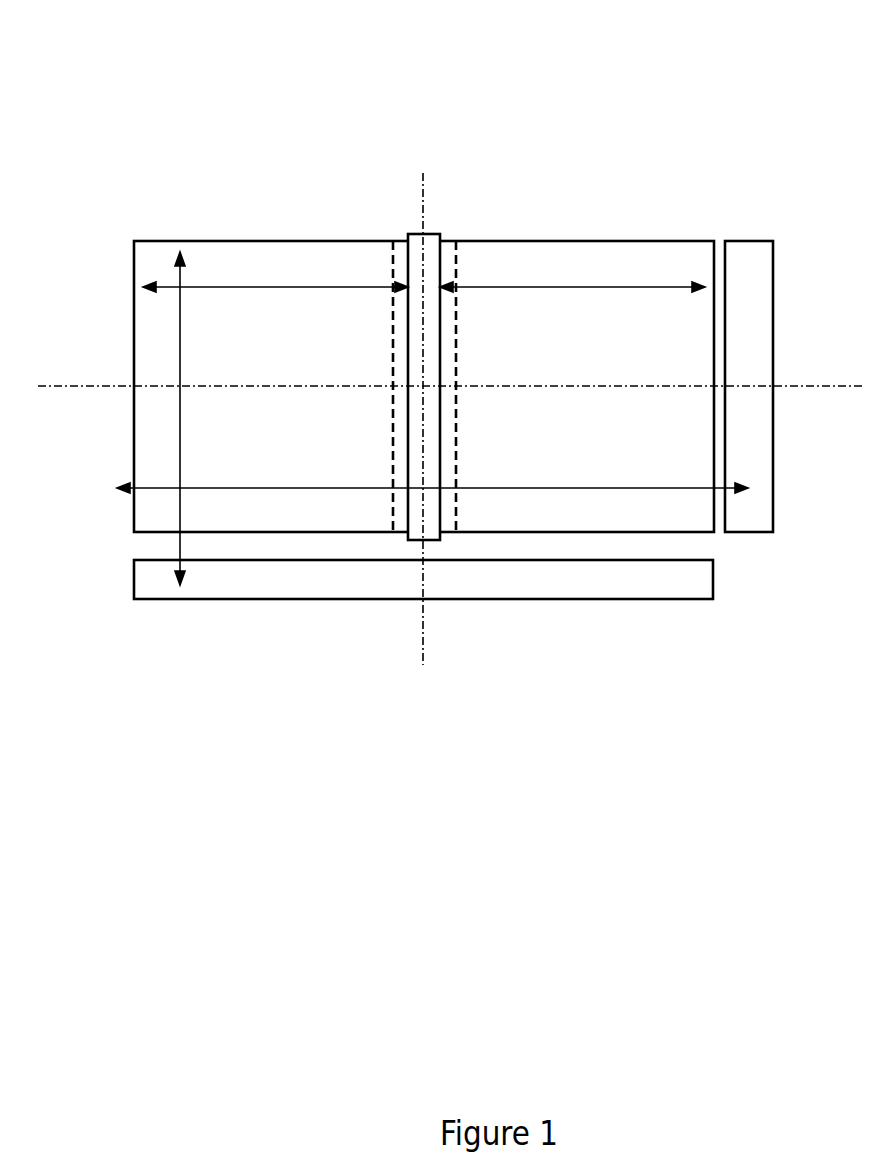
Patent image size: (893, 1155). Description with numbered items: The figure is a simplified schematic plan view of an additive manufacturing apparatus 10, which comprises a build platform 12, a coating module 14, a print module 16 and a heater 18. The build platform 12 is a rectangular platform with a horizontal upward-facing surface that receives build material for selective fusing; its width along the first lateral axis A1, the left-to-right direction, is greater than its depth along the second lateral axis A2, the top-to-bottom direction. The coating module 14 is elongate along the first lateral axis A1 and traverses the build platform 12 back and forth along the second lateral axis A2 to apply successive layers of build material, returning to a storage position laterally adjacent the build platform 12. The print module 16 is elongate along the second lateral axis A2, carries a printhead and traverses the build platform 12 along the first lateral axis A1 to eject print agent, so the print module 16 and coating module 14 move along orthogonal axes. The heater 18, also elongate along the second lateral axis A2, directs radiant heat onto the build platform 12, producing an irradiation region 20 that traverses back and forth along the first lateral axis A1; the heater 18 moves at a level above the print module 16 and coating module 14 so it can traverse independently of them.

The additive manufacturing apparatus 10 is at (139, 26).
The build platform 12 is at (424, 336).
The coating module 14 is at (423, 628).
The print module 16 is at (736, 338).
The heater 18 is at (395, 343).
The irradiation region 20 is at (444, 335).
The first lateral axis A1 is at (449, 326).
The second lateral axis A2 is at (394, 373).